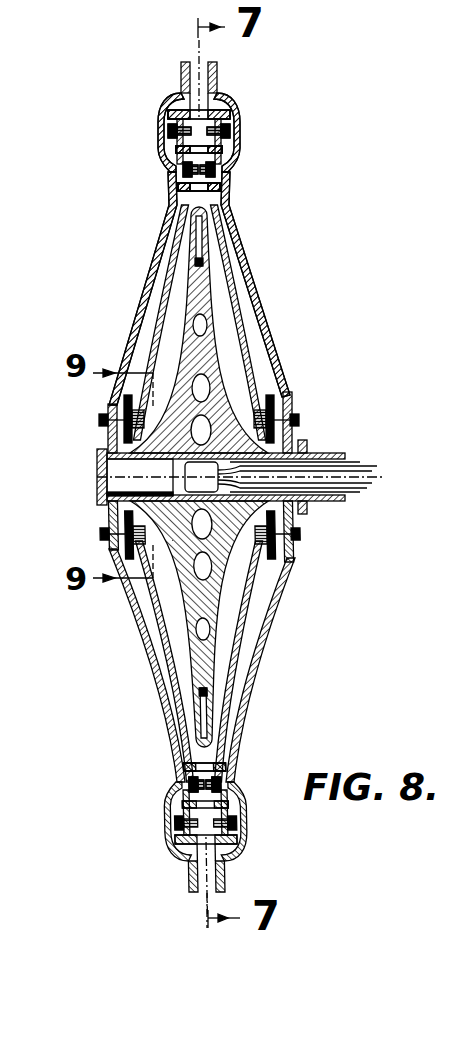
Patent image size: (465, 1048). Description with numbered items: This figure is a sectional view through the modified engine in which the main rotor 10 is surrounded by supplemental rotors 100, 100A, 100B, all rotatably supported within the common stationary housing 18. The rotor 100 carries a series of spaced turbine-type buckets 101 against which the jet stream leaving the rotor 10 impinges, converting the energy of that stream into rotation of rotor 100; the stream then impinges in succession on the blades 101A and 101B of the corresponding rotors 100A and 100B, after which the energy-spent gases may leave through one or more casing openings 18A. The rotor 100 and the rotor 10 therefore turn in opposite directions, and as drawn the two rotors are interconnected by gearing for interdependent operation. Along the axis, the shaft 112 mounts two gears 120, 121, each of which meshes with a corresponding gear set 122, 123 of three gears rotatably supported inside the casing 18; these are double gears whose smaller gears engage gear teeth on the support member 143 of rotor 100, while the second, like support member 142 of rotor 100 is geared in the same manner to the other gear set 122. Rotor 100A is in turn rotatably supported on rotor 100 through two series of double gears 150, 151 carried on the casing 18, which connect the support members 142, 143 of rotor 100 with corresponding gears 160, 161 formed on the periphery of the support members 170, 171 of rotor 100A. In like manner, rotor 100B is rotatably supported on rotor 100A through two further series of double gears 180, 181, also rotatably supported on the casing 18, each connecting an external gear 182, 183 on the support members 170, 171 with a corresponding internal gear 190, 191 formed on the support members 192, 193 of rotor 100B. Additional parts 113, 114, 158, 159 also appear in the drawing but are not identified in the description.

The rotor 10 is at (223, 355).
The stationary structure 18 is at (257, 282).
The casing openings 18A is at (218, 72).
The supplemental rotor 100 is at (181, 200).
The rotor 100A is at (178, 152).
The rotor 100B is at (181, 108).
The turbine type buckets 101 is at (224, 200).
The blades 101A is at (208, 156).
The blades 101B is at (210, 113).
The shaft 112 is at (318, 455).
The left flange plate 113 is at (106, 450).
The right flange plate 114 is at (301, 450).
The gear 120 is at (294, 510).
The gear 121 is at (115, 498).
The gear set 122 is at (276, 395).
The gear set 123 is at (127, 403).
The second support member 142 is at (231, 255).
The support member 143 is at (167, 284).
The double gears 150 is at (216, 180).
The double gears 151 is at (184, 177).
The right lower plate 158 is at (219, 189).
The left lower plate 159 is at (186, 190).
The gear 160 is at (218, 164).
The gear 161 is at (175, 163).
The support member 170 is at (222, 156).
The support member 171 is at (180, 147).
The double gears 180 is at (238, 114).
The double gears 181 is at (173, 132).
The external gear 182 is at (236, 782).
The external gear 183 is at (186, 800).
The internal gear 190 is at (236, 826).
The internal gear 191 is at (182, 831).
The support member 192 is at (243, 103).
The support member 193 is at (172, 126).